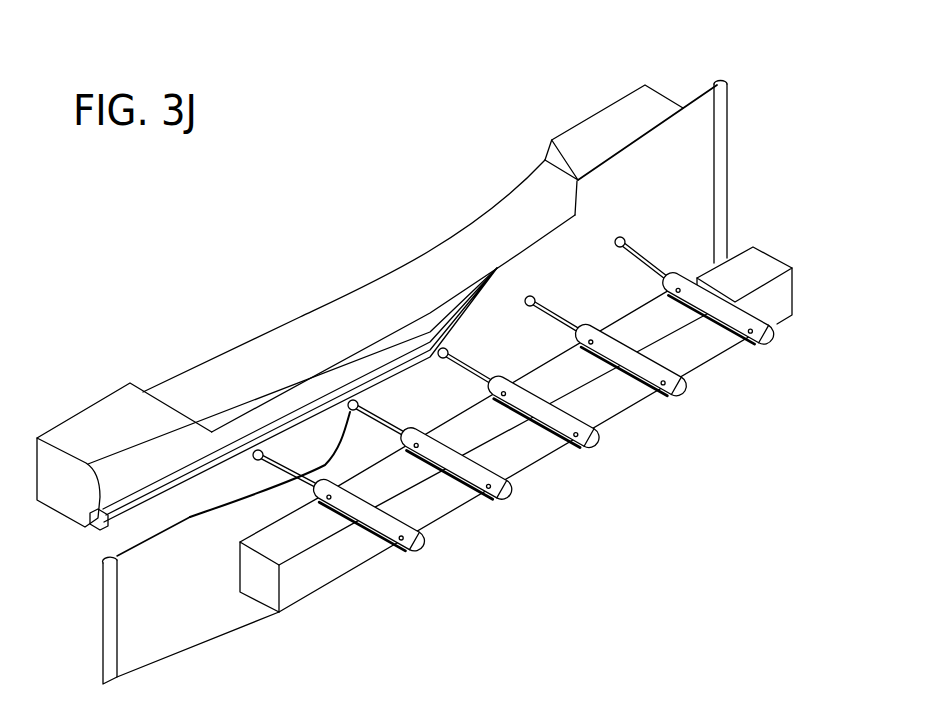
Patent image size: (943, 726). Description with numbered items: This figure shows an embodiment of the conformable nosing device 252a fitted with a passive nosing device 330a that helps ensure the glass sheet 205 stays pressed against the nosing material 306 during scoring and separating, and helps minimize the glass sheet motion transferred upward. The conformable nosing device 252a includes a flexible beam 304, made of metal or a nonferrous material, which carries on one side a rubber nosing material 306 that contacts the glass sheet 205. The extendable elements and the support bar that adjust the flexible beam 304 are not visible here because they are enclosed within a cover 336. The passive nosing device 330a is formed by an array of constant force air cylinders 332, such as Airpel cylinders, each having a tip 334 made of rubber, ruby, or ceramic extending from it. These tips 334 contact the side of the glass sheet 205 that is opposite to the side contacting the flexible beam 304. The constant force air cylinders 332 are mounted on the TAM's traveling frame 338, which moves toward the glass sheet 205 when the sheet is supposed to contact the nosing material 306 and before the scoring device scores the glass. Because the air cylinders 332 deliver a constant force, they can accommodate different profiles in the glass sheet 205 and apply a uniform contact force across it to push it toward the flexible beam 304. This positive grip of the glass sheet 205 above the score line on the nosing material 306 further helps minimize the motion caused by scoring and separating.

The conformable nosing device 252a is at (683, 76).
The glass sheet 205 is at (683, 172).
The tip 334 is at (258, 450).
The passive nosing device 330a is at (794, 163).
The cover 336 is at (95, 427).
The flexible beam 304 is at (102, 514).
The nosing material 306 is at (99, 527).
The constant force air cylinder 332 is at (766, 336).
The traveling frame 338 is at (313, 567).